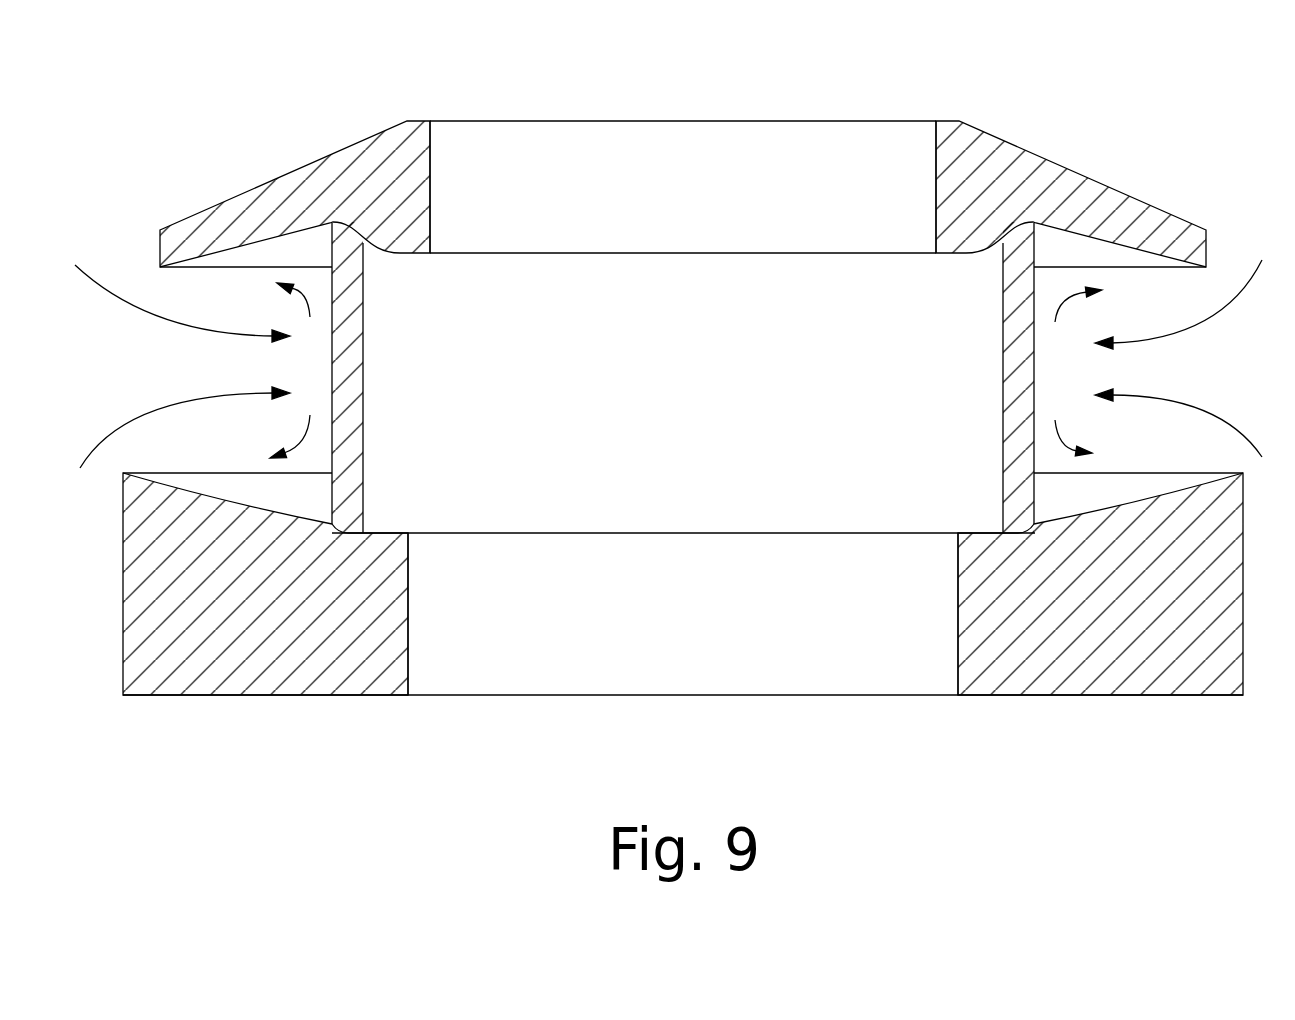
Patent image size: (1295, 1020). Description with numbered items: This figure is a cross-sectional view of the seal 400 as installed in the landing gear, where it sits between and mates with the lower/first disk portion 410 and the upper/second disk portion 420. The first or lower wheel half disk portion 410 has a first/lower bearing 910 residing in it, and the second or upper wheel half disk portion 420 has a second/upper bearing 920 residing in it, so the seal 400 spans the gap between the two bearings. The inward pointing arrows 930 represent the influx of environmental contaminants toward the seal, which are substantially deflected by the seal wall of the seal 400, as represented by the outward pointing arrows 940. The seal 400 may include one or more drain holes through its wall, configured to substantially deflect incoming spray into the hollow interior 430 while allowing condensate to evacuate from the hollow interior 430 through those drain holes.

The seal 400 is at (363, 358).
The lower/first disk portion 410 is at (308, 695).
The upper/second disk portion 420 is at (345, 148).
The hollow interior 430 is at (657, 498).
The first/lower bearing 910 is at (793, 673).
The second/upper bearing 920 is at (780, 135).
The inward pointing arrows 930 is at (668, 364).
The outward pointing arrows 940 is at (686, 370).